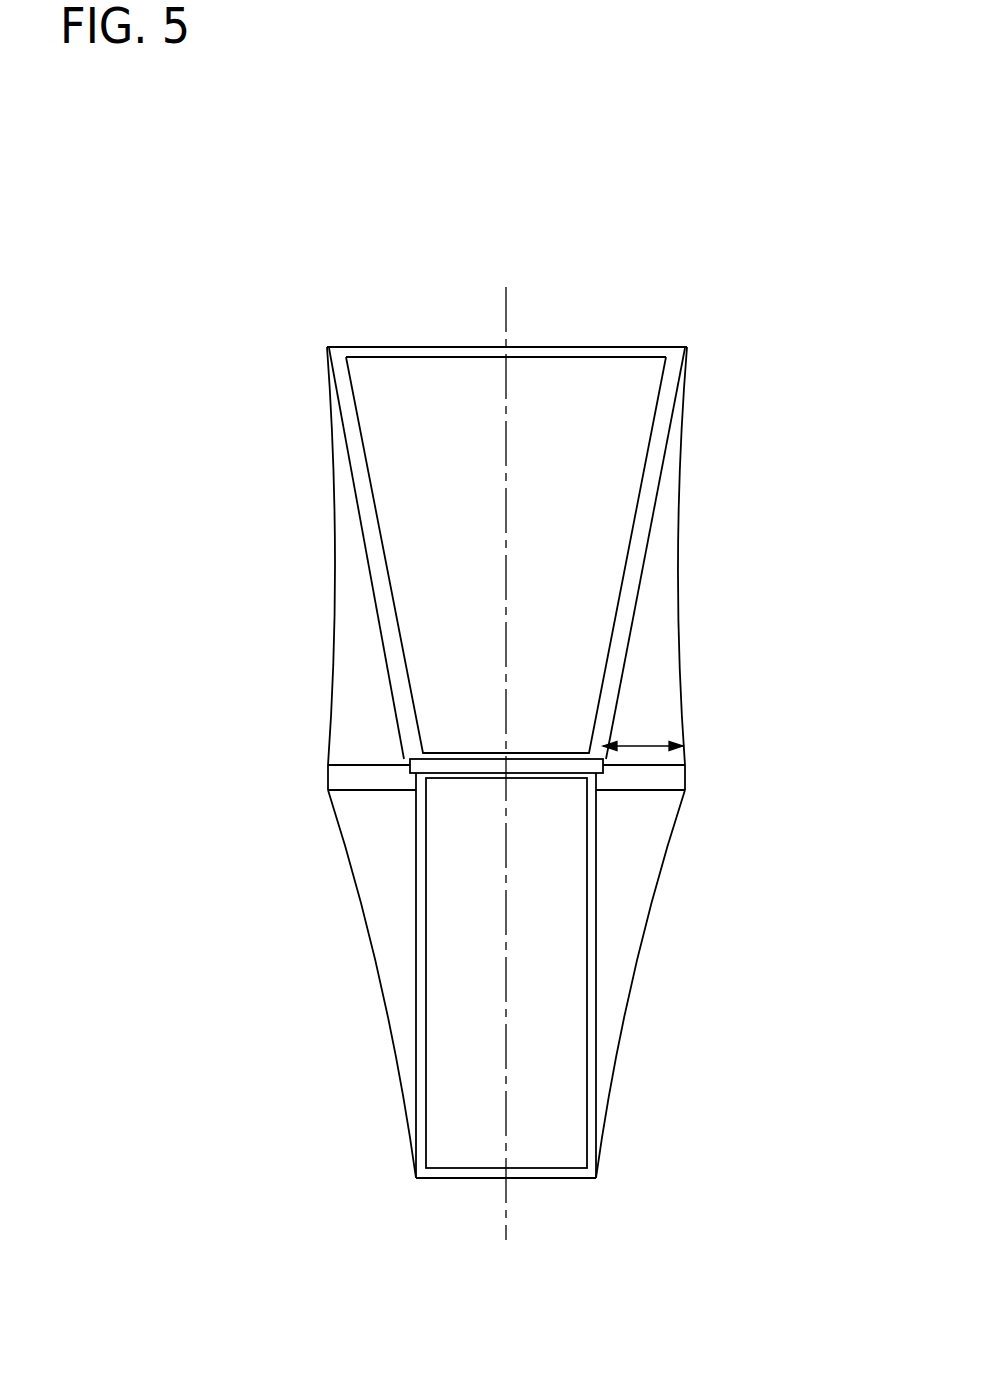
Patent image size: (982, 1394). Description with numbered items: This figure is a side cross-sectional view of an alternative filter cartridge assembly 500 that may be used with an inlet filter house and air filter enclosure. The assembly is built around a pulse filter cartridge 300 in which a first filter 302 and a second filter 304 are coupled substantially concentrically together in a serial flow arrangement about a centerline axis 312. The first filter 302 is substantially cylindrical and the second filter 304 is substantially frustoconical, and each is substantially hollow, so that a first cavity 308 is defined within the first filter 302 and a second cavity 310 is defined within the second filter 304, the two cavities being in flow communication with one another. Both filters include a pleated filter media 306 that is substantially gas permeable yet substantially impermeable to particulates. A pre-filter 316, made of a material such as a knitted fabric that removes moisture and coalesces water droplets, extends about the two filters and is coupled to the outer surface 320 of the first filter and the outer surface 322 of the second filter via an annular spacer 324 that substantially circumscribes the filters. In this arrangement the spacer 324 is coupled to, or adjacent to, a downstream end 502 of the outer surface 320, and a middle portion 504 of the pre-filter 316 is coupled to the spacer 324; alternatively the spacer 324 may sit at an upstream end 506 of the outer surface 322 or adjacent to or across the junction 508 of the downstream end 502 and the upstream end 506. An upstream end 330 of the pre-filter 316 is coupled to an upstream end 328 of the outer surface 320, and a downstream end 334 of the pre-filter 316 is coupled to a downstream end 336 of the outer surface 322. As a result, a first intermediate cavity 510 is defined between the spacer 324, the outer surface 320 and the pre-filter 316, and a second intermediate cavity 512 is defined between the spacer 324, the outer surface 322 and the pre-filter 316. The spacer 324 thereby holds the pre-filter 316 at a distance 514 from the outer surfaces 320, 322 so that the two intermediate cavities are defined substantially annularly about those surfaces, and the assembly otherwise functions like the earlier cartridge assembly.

The filter cartridge assembly 500 is at (215, 245).
The pulse filter cartridge 300 is at (660, 348).
The first filter 302 is at (597, 958).
The second filter 304 is at (643, 553).
The pleated filter media 306 is at (393, 585).
The first cavity 308 is at (571, 927).
The second cavity 310 is at (581, 577).
The centerline axis 312 is at (507, 297).
The pre-filter 316 is at (334, 618).
The outer surface of first filter 320 is at (416, 1045).
The outer surface of second filter 322 is at (353, 483).
The spacer 324 is at (371, 791).
The upstream end of outer surface 328 is at (406, 1192).
The upstream end of pre-filter 330 is at (395, 1171).
The downstream end of pre-filter 334 is at (304, 363).
The downstream end of outer surface 336 is at (305, 342).
The downstream end of outer surface 502 is at (613, 805).
The middle portion of pre-filter 504 is at (303, 777).
The upstream end of outer surface 506 is at (624, 723).
The junction 508 is at (393, 744).
The first intermediate cavity 510 is at (405, 853).
The second intermediate cavity 512 is at (389, 695).
The distance 514 is at (645, 746).